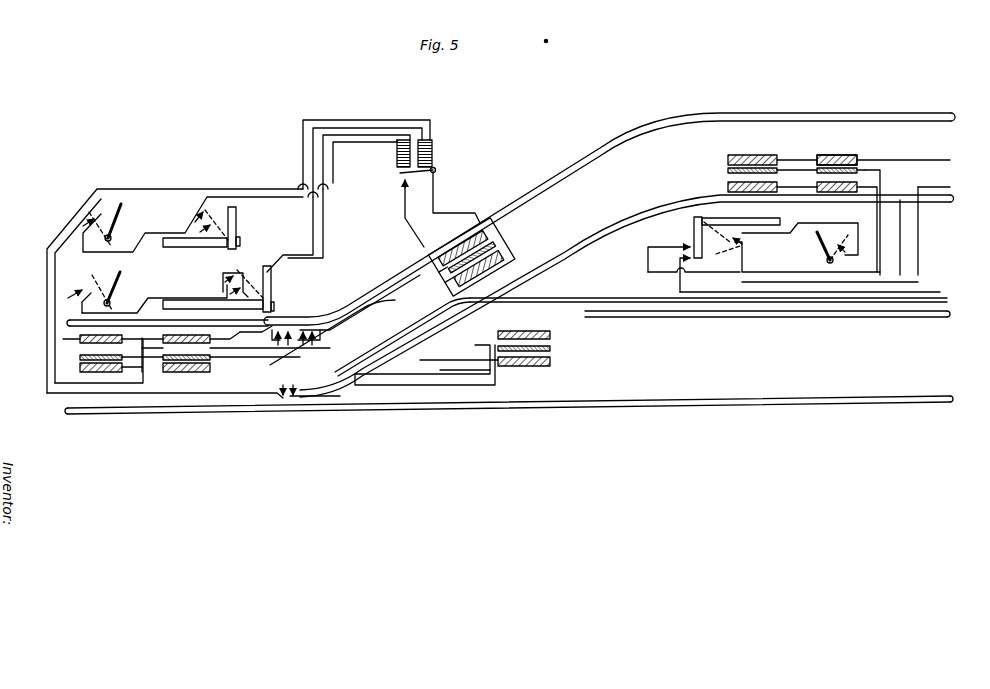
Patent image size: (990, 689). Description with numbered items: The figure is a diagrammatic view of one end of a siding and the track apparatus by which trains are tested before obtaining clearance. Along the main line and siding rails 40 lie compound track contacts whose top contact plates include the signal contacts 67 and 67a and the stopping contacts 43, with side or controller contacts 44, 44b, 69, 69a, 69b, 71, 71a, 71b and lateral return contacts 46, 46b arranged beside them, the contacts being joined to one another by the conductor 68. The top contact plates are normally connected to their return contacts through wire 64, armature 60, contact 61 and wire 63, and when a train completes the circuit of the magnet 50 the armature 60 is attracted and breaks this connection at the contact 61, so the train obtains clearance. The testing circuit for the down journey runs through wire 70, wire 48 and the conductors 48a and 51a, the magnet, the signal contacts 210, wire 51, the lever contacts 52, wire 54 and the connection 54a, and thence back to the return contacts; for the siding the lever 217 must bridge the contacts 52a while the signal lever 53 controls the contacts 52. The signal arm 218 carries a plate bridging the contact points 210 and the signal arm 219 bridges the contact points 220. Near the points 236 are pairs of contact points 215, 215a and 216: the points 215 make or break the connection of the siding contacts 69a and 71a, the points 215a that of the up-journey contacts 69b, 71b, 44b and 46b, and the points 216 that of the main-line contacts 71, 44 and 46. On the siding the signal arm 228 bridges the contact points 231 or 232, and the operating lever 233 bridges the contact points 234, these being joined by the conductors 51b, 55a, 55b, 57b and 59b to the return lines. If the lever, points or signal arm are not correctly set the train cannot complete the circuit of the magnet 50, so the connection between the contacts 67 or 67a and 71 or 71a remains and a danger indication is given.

The rail 40 is at (597, 150).
The stopping contact 43 is at (505, 268).
The side or controller contact 44 is at (552, 349).
The side or controller contact 44b is at (728, 170).
The lateral return contact 46 is at (552, 335).
The lateral return contact 46b is at (728, 187).
The wire 48 is at (76, 203).
The conductor 48a is at (405, 122).
The magnet 50 is at (433, 150).
The wire 51 is at (200, 297).
The conductor 51a is at (340, 118).
The conductor 51b is at (648, 268).
The contacts 52 is at (154, 288).
The contacts 52a is at (104, 222).
The signal lever 53 is at (121, 280).
The wire 54 is at (71, 292).
The frame portion 54a is at (55, 273).
The line 55a is at (935, 305).
The line 55b is at (412, 312).
The conductor 57b is at (930, 187).
The contact 59b is at (845, 250).
The armature 60 is at (436, 170).
The contact 61 is at (403, 177).
The wire 63 is at (403, 201).
The wire 64 is at (436, 184).
The signal contact 67 is at (80, 369).
The signal contact 67a is at (190, 372).
The conductor 68 is at (455, 366).
The side or controller contact plate 69 is at (80, 357).
The track contact 69a is at (212, 360).
The track contact 69b is at (855, 165).
The wire 70 is at (805, 146).
The track contact 71 is at (63, 339).
The track contact 71a is at (255, 330).
The track contact 71b is at (860, 185).
The signal contacts 210 is at (240, 280).
The contact points 215 is at (292, 330).
The contact points 215a is at (335, 312).
The contact points 216 is at (277, 386).
The signal lever 217 is at (118, 225).
The signal arm 218 is at (280, 300).
The signal arm 219 is at (237, 220).
The contact points 220 is at (202, 236).
The signal arm 228 is at (684, 273).
The contact points 231 is at (690, 250).
The contact points 232 is at (737, 245).
The operating lever 233 is at (822, 245).
The contact points 234 is at (848, 236).
The points 236 is at (345, 392).